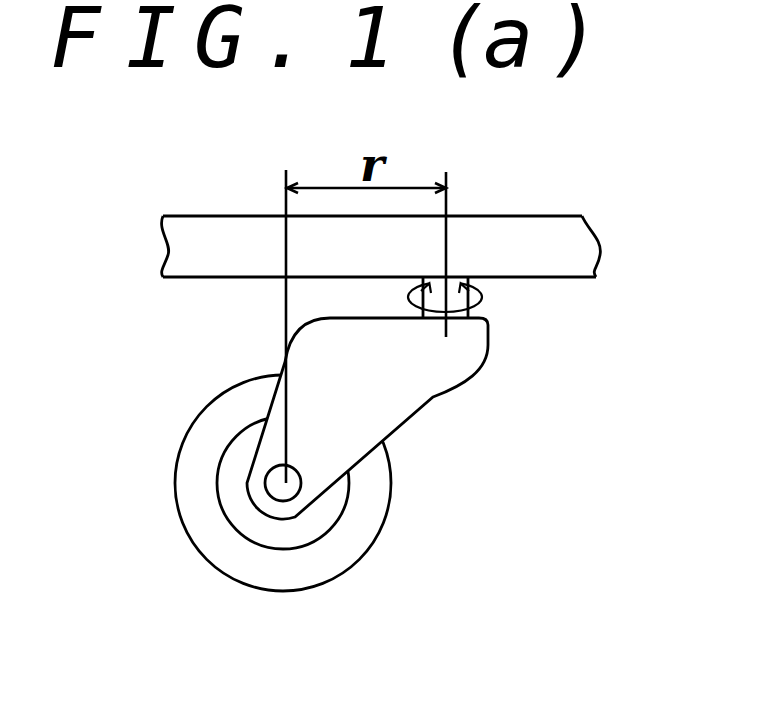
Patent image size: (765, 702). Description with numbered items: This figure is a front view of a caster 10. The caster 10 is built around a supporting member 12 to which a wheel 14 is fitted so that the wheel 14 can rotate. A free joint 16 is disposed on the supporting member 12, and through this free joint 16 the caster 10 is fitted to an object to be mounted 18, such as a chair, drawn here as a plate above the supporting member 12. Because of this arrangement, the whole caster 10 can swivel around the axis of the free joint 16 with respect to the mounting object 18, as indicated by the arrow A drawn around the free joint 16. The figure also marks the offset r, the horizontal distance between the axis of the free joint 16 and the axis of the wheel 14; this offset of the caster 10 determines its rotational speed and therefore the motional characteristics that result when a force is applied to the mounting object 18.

The caster 10 is at (140, 338).
The supporting member 12 is at (420, 388).
The wheel 14 is at (368, 552).
The free joint 16 is at (420, 285).
The object to be mounted 18 is at (573, 240).